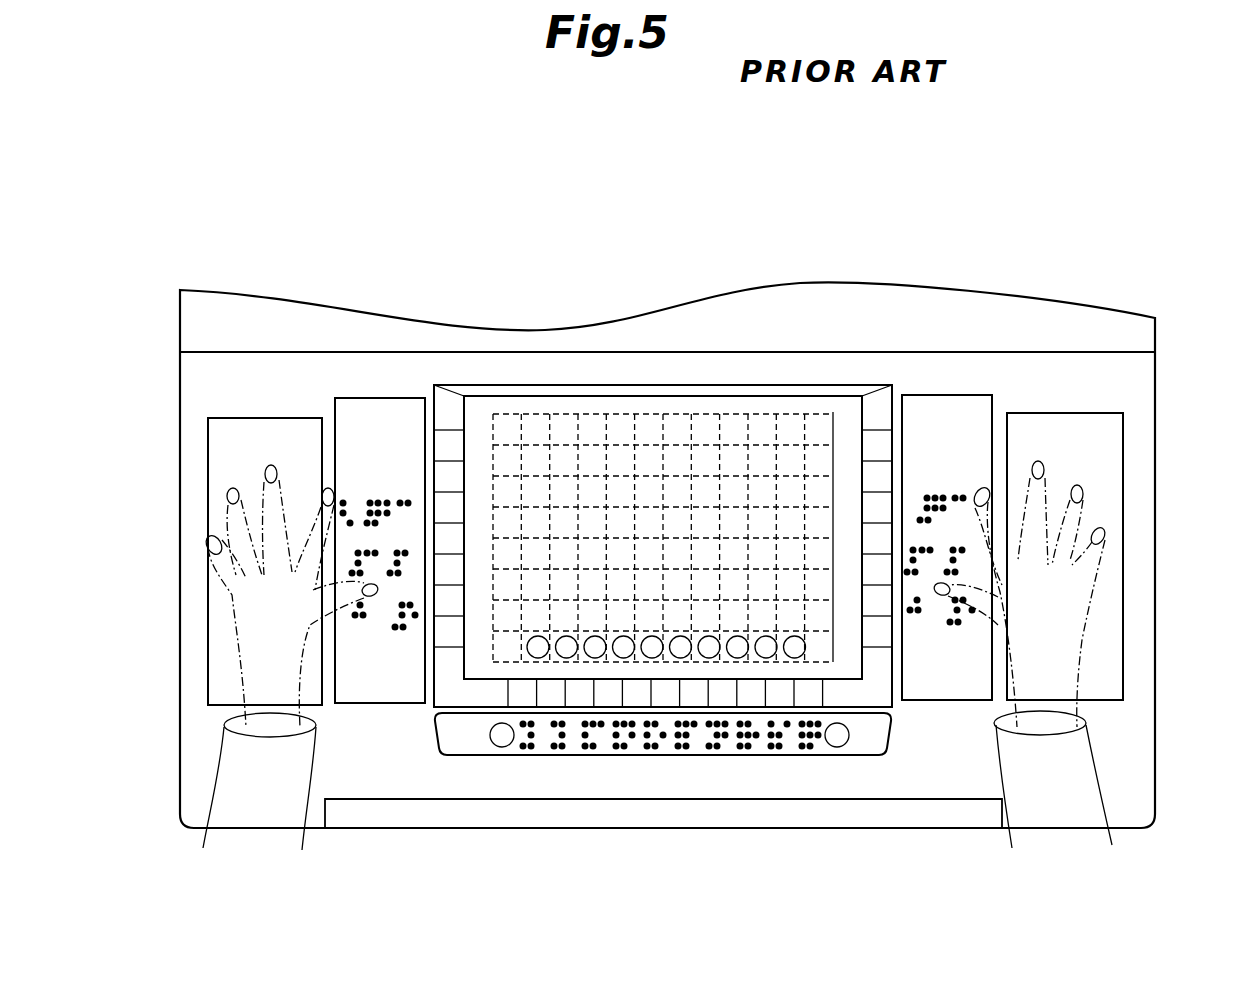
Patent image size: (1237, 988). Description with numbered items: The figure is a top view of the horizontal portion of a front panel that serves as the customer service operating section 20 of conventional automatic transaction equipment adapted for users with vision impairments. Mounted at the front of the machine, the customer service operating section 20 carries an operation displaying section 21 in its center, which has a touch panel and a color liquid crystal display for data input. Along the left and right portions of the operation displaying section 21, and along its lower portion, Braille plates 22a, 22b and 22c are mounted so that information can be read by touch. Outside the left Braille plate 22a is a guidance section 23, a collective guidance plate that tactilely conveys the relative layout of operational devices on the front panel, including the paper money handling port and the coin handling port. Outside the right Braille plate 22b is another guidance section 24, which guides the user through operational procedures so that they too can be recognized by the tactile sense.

The customer service operating section 20 is at (1136, 384).
The operation displaying section 21 is at (707, 430).
The Braille plate 22a is at (382, 420).
The Braille plate 22b is at (918, 390).
The Braille plate 22c is at (865, 740).
The guidance section 23 is at (287, 430).
The guidance section 24 is at (1053, 410).